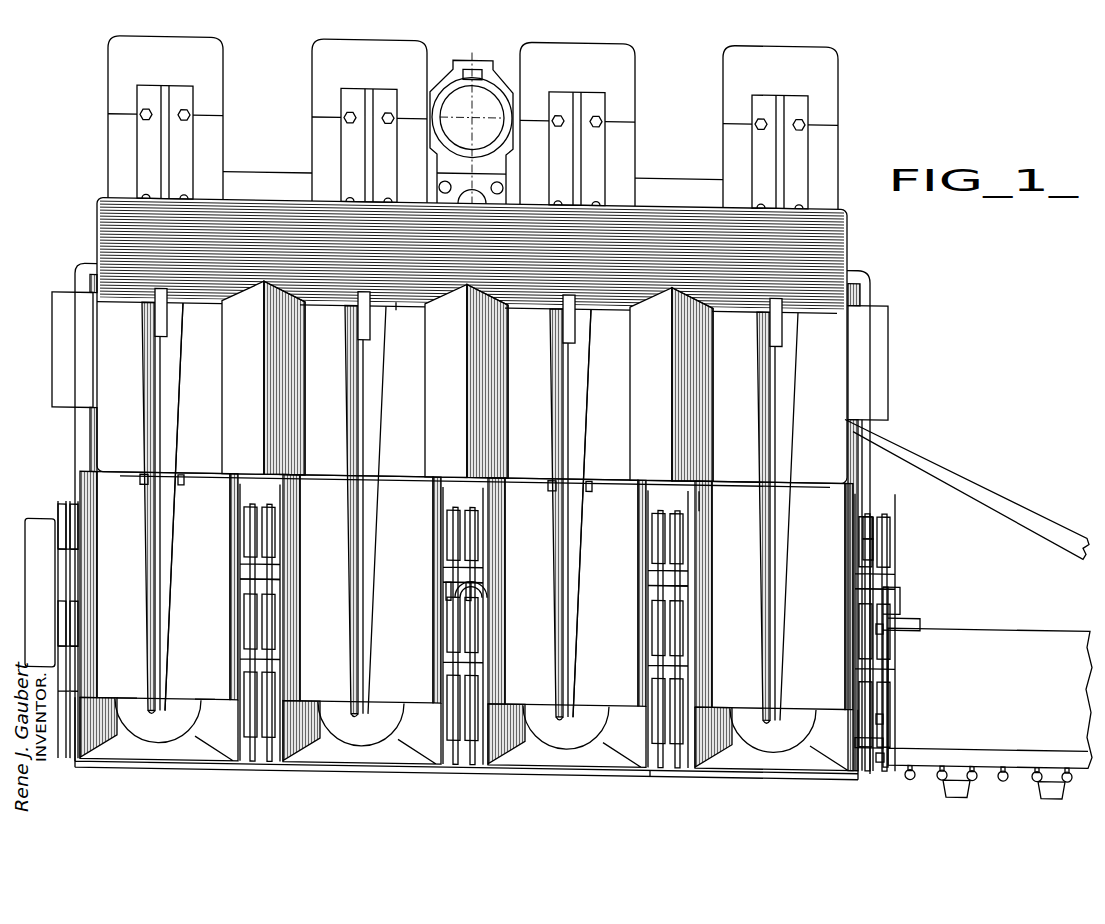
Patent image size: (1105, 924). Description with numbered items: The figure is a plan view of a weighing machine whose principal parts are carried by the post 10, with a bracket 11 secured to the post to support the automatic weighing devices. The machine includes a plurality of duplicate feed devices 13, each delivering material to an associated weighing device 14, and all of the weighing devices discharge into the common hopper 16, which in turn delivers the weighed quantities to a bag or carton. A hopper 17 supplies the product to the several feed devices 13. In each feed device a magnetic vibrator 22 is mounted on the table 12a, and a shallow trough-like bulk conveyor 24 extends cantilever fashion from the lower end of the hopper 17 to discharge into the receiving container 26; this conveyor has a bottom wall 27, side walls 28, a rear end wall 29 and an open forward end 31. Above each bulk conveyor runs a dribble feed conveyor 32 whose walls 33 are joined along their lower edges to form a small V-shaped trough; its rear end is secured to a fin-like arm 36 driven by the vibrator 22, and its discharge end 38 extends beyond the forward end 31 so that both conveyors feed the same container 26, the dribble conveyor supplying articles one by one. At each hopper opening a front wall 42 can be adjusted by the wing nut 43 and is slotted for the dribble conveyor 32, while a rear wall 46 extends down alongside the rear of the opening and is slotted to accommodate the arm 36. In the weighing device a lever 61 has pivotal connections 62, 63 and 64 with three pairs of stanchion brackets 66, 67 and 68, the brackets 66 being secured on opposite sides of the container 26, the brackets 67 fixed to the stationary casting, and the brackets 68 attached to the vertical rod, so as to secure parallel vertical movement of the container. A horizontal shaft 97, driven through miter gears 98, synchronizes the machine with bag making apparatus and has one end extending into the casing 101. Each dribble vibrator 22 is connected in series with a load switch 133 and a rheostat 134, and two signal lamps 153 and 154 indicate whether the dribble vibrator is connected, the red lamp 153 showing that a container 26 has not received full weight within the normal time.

The post 10 is at (487, 80).
The bracket 11 is at (503, 154).
The table 12a is at (283, 168).
The feed device 13 is at (699, 485).
The weighing device 14 is at (263, 758).
The common hopper 16 is at (660, 760).
The hopper 17 is at (847, 223).
The magnetic vibrator 22 is at (108, 61).
The bulk conveyor 24 is at (77, 468).
The receiving container 26 is at (126, 760).
The bottom wall 27 is at (128, 695).
The side walls 28 is at (78, 483).
The rear end wall 29 is at (92, 262).
The forward end 31 is at (204, 696).
The dribble feed conveyor 32 is at (166, 558).
The walls 33 is at (160, 542).
The fin-like arm 36 is at (145, 137).
The discharge end 38 is at (155, 706).
The front wall 42 is at (186, 480).
The wing nut 43 is at (152, 482).
The rear wall 46 is at (398, 300).
The lever 61 is at (262, 571).
The pivotal connection 62 is at (877, 704).
The pivotal connection 63 is at (875, 614).
The pivotal connection 64 is at (875, 520).
The stanchion brackets 66 is at (870, 724).
The stanchion brackets 67 is at (876, 594).
The stanchion brackets 68 is at (876, 501).
The horizontal shaft 97 is at (482, 586).
The miter gears 98 is at (450, 585).
The casing 101 is at (40, 517).
The load switch 133 is at (910, 770).
The rheostat 134 is at (960, 784).
The signal lamp 153 is at (973, 753).
The signal lamp 154 is at (942, 753).